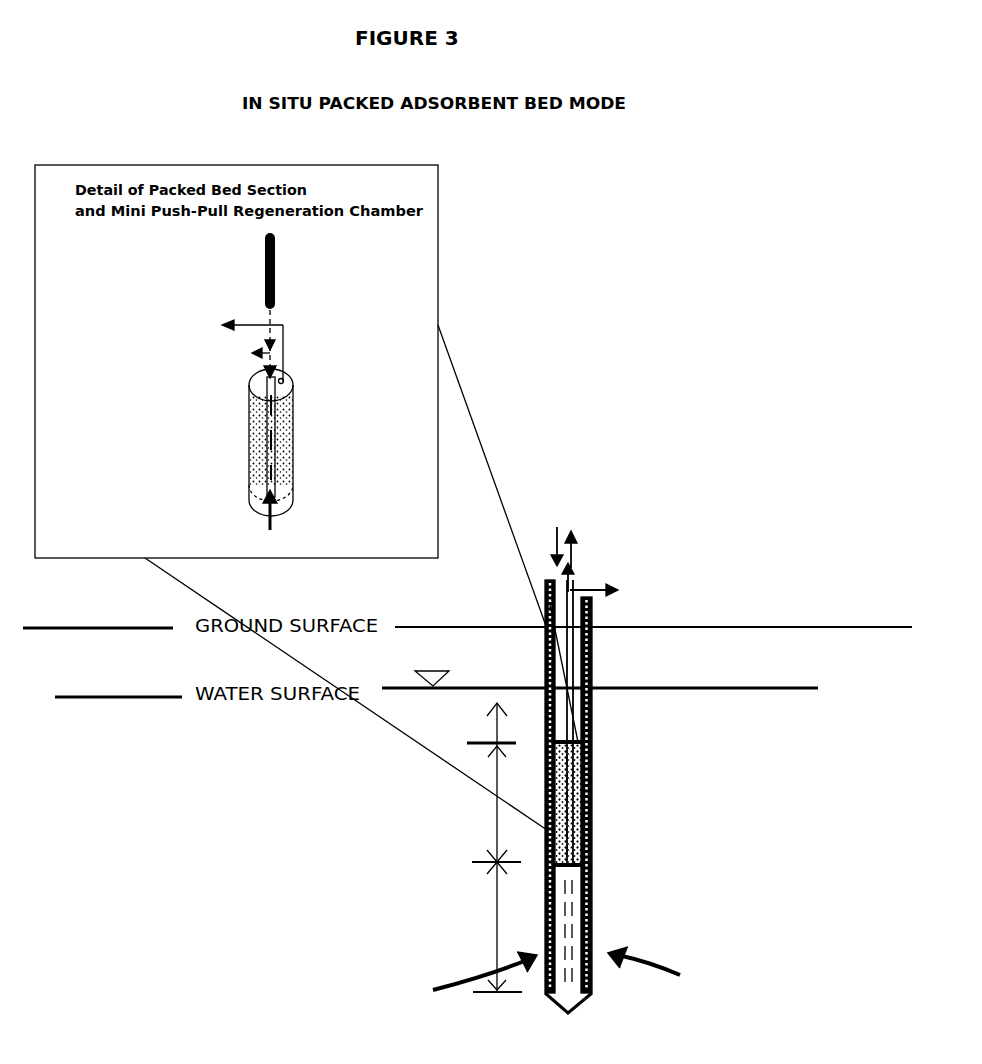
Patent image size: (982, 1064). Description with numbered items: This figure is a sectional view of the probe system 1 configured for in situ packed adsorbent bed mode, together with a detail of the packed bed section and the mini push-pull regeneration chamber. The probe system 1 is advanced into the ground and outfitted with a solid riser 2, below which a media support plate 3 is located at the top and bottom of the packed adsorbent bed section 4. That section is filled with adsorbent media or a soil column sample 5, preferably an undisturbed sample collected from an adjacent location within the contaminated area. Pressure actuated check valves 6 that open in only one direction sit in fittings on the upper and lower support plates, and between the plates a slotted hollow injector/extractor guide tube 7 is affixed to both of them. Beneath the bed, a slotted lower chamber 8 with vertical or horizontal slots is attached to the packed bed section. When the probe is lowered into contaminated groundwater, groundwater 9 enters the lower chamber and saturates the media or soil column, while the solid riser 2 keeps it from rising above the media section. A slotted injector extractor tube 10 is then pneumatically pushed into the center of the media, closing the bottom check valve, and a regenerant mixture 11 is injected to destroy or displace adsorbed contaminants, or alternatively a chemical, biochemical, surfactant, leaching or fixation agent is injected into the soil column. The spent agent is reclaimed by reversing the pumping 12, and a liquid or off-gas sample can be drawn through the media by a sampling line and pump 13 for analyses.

The probe system 1 is at (546, 613).
The solid riser 2 is at (545, 725).
The media support plate 3 is at (546, 840).
The packed adsorbent bed section 4 is at (592, 772).
The adsorbent media or soil column sample 5 is at (592, 813).
The pressure actuated check valves 6 is at (547, 757).
The slotted hollow injector/extractor guide tube 7 is at (575, 838).
The slotted lower chamber 8 is at (547, 893).
The groundwater 9 is at (523, 852).
The slotted injector extractor tube 10 is at (266, 272).
The regenerant mixture 11 is at (365, 457).
The reversed pumping 12 is at (581, 561).
The sampling line and pump 13 is at (411, 461).